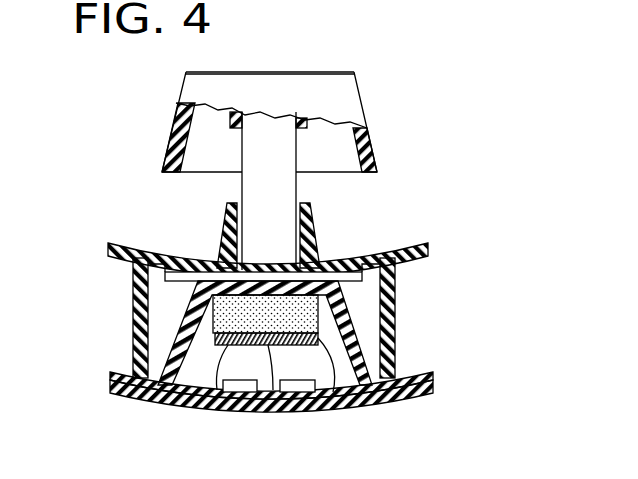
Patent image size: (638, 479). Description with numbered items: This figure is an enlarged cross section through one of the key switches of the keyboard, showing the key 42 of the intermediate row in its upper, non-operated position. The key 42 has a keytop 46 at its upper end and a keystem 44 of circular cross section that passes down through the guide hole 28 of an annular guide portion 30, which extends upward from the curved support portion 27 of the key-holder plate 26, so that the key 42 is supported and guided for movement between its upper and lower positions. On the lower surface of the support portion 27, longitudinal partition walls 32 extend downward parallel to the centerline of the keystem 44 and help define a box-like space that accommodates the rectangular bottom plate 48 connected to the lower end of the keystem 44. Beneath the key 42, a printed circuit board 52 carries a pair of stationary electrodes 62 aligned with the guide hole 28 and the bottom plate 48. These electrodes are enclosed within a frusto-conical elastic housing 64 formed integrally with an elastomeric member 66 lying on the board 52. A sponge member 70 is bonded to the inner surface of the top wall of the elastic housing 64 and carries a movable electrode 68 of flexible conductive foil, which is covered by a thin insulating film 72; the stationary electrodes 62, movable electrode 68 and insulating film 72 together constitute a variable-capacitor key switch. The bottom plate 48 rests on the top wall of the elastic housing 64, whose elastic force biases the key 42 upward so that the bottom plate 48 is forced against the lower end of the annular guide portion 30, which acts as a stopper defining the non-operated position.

The key-holder plate 26 is at (299, 328).
The support portion 27 is at (401, 250).
The guide hole 28 is at (238, 232).
The annular guide portion 30 is at (225, 230).
The longitudinal partition wall 32 is at (133, 300).
The key 42 is at (309, 98).
The keystem 44 is at (288, 190).
The keytop 46 is at (344, 75).
The rectangular bottom plate 48 is at (362, 277).
The printed circuit board 52 is at (405, 400).
The stationary electrodes 62 is at (242, 392).
The elastic housing 64 is at (193, 328).
The elastomeric member 66 is at (415, 375).
The movable electrode 68 is at (335, 395).
The sponge member 70 is at (228, 391).
The insulating film 72 is at (272, 392).